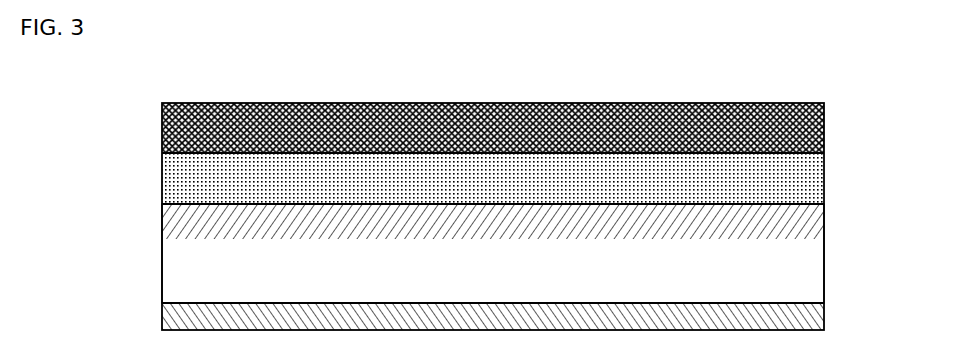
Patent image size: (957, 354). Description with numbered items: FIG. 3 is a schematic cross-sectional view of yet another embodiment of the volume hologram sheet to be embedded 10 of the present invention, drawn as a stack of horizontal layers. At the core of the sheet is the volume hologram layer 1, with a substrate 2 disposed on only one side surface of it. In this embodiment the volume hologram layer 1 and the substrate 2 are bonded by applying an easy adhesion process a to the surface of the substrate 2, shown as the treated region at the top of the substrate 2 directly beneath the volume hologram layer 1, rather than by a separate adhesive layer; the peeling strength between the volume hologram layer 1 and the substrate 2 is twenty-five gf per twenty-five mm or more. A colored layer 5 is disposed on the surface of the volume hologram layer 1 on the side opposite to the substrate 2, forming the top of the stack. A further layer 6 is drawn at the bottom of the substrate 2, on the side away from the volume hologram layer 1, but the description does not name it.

The volume hologram sheet to be embedded 10 is at (657, 85).
The colored layer 5 is at (768, 128).
The volume hologram layer 1 is at (768, 178).
The easy adhesion process a is at (768, 220).
The substrate 2 is at (768, 277).
The adhesive layer 6 is at (775, 318).